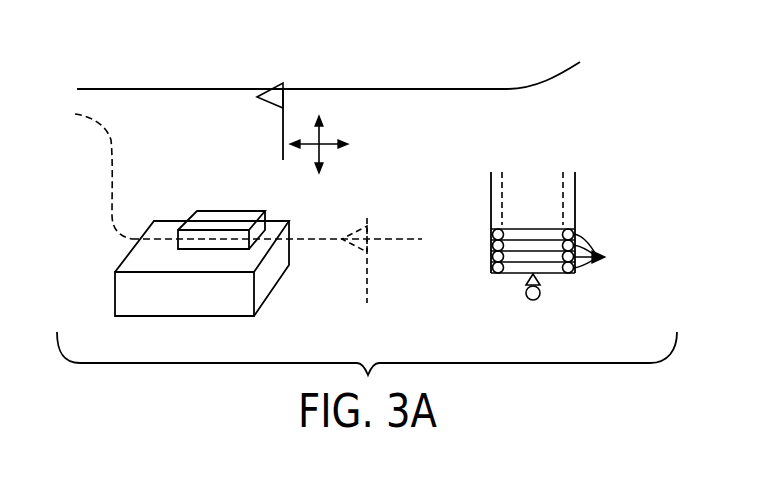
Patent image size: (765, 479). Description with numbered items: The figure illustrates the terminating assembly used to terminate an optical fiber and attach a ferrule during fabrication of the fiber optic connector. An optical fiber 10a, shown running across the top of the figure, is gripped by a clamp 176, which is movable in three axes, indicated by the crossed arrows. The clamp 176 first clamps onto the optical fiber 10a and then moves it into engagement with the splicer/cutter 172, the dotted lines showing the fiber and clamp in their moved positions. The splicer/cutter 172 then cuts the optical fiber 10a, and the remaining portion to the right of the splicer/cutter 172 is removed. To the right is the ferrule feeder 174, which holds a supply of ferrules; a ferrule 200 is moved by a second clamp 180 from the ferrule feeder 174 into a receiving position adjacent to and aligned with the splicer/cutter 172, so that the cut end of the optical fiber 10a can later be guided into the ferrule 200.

The optical fiber 10a is at (412, 88).
The clamp 176 is at (281, 83).
The splicer/cutter 172 is at (273, 268).
The ferrule feeder 174 is at (575, 215).
The ferrule 200 is at (612, 254).
The clamp 180 is at (540, 295).